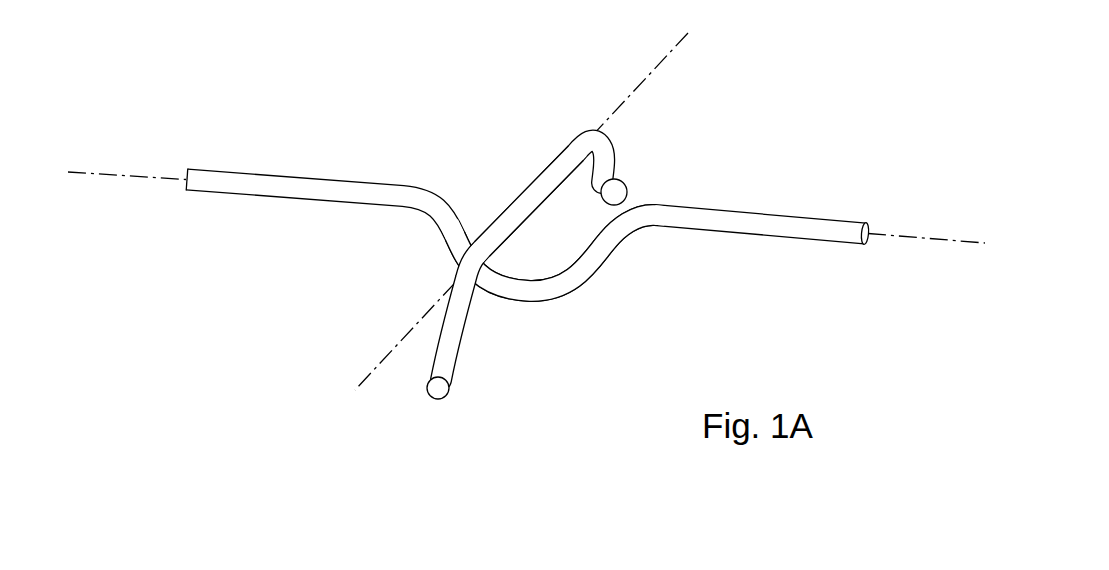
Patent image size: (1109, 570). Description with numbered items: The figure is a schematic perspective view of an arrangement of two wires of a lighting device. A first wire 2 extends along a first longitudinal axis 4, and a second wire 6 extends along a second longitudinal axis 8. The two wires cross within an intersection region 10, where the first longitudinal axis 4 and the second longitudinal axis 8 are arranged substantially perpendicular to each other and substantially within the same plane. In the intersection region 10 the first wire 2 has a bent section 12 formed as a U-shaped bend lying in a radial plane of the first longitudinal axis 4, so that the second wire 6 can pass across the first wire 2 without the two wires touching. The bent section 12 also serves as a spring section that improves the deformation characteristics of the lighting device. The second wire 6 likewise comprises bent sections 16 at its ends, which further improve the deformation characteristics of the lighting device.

The first wire 2 is at (753, 225).
The first longitudinal axis 4 is at (927, 237).
The second wire 6 is at (563, 157).
The second longitudinal axis 8 is at (640, 82).
The intersection region 10 is at (508, 158).
The bent section 12 is at (582, 302).
The bent sections 16 is at (630, 158).